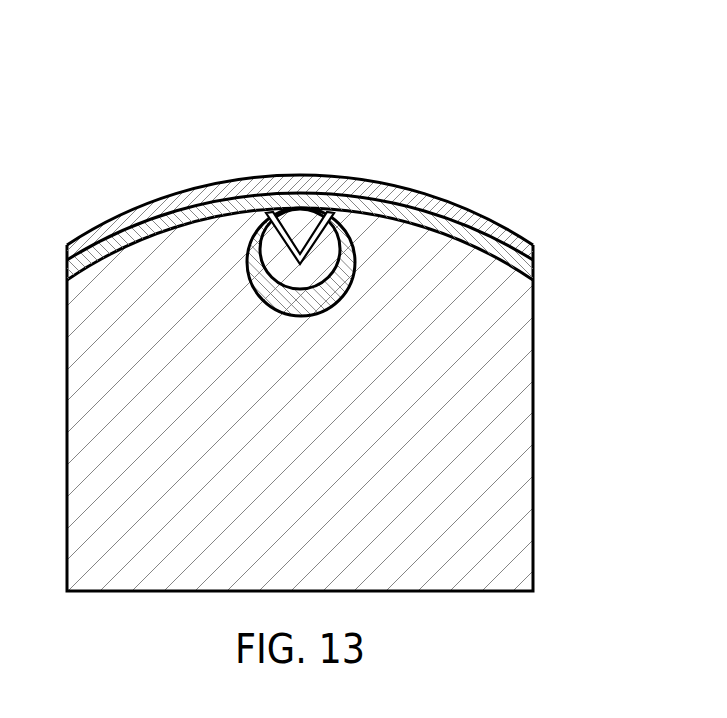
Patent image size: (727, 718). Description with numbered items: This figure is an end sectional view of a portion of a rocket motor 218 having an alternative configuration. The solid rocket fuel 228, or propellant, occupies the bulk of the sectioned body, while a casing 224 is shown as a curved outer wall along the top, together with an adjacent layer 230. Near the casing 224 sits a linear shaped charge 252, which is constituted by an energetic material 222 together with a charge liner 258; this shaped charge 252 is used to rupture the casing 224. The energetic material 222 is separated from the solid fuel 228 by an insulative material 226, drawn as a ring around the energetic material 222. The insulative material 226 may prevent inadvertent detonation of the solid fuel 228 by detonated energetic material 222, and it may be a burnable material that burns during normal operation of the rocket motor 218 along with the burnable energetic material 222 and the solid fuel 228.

The rocket motor 218 is at (363, 321).
The linear shaped charge 252 is at (320, 183).
The charge liner 258 is at (294, 213).
The energetic material 222 is at (327, 250).
The casing 224 is at (424, 194).
The inner layer 230 is at (467, 220).
The insulative material 226 is at (345, 273).
The solid rocket fuel 228 is at (508, 385).